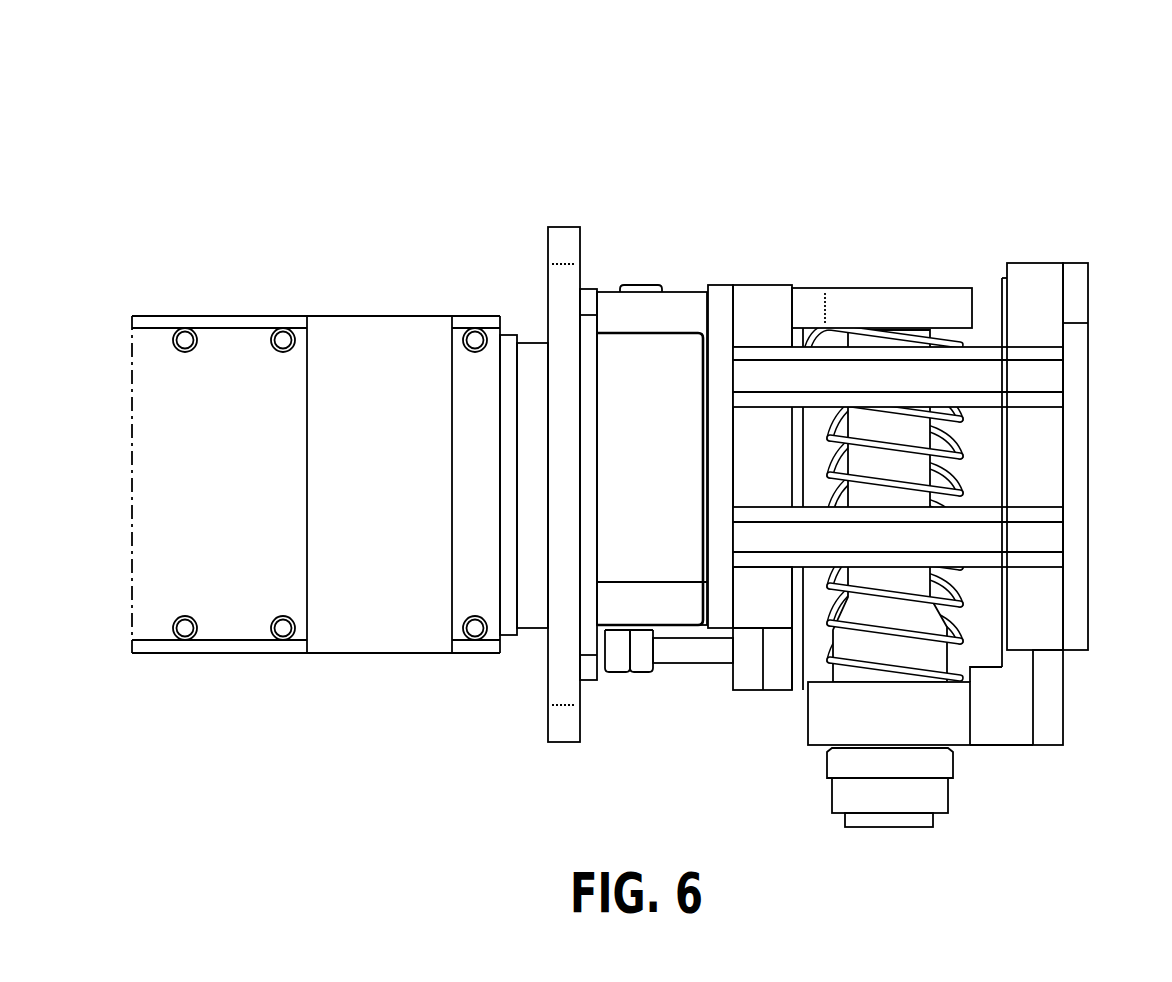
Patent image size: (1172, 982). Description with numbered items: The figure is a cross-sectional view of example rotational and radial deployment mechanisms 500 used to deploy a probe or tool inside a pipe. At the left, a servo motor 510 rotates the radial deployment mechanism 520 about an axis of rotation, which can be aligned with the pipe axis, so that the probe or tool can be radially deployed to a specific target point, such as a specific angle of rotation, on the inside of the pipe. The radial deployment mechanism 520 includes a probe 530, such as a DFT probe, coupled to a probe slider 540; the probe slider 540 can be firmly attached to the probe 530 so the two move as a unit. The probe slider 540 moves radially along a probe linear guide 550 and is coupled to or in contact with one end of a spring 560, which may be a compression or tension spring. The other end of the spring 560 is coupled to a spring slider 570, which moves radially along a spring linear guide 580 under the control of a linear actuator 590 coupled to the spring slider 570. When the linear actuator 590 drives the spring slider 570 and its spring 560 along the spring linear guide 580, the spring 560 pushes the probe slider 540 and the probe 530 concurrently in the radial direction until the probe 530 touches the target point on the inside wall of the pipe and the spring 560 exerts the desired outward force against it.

The rotational and radial deployment mechanisms 500 is at (190, 42).
The servo motor 510 is at (220, 380).
The radial deployment mechanism 520 is at (1113, 147).
The probe 530 is at (937, 797).
The probe slider 540 is at (1050, 717).
The probe linear guide 550 is at (1035, 283).
The spring 560 is at (893, 330).
The spring slider 570 is at (747, 672).
The spring linear guide 580 is at (762, 308).
The linear actuator 590 is at (652, 373).